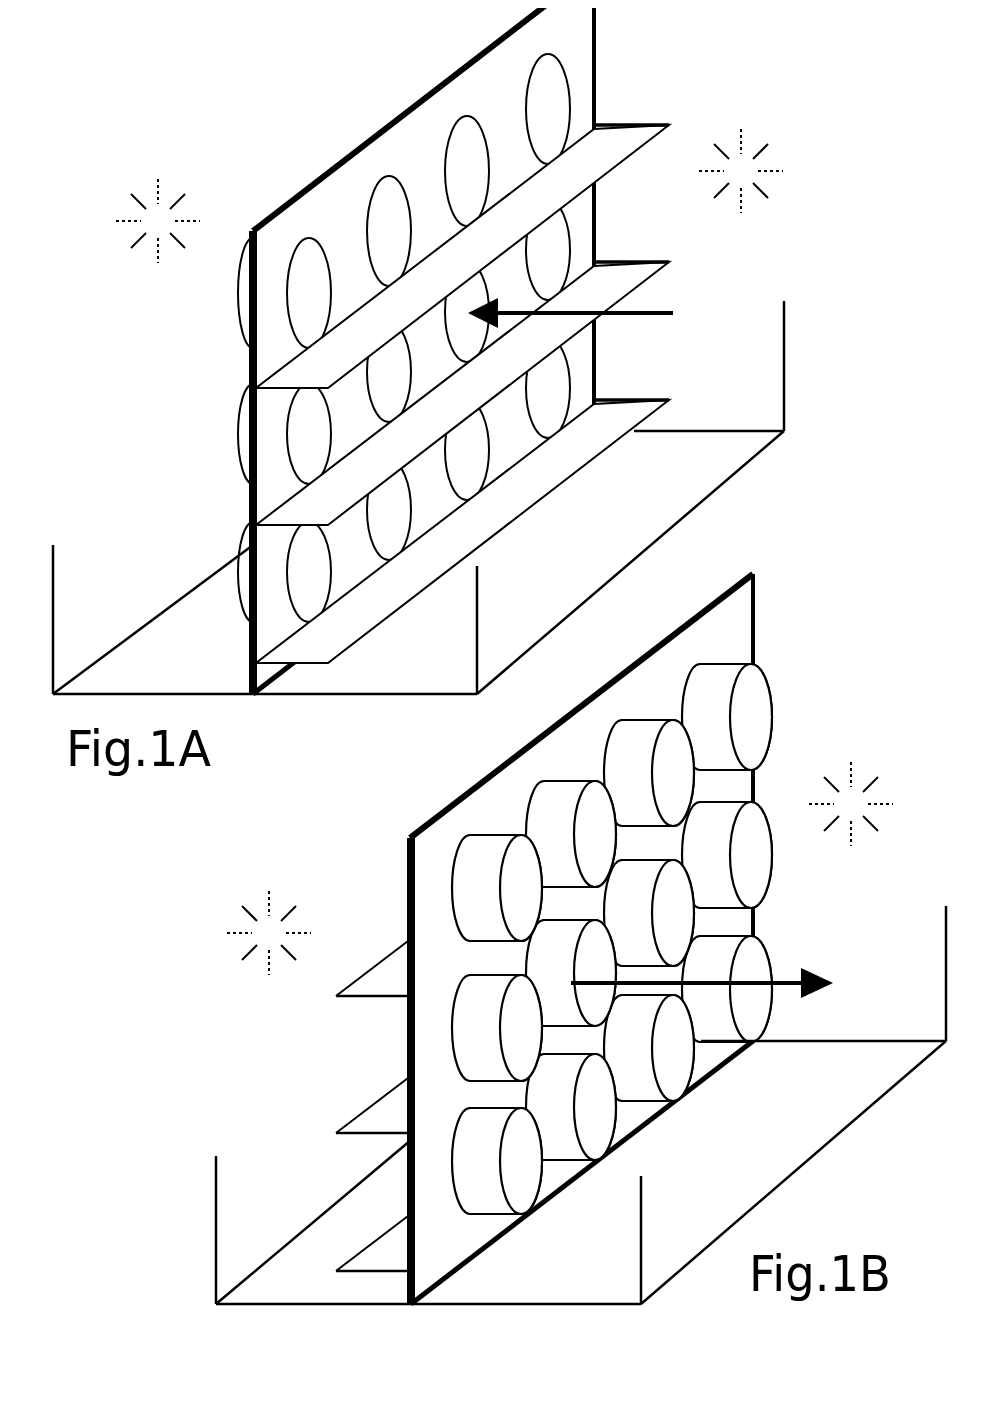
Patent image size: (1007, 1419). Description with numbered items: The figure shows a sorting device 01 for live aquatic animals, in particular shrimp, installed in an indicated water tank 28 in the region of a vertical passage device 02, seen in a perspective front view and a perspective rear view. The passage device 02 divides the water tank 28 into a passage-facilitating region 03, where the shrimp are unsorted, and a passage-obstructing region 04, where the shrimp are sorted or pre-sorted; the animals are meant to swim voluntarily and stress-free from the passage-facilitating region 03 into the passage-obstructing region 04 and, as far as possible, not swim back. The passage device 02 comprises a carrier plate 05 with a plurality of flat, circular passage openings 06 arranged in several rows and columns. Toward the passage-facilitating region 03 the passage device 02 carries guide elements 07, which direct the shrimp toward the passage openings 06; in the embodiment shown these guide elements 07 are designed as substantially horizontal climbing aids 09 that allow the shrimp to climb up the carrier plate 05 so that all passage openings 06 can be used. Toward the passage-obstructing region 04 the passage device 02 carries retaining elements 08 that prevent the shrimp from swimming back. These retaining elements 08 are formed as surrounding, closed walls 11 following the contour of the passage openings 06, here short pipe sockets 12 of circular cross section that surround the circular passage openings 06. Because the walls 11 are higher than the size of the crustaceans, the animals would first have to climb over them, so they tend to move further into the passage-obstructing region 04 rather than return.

In FIG. 1A, the sorting device 01 is at (178, 121).
In FIG. 1B, the sorting device 01 is at (166, 952).
In FIG. 1A, the passage device 02 is at (652, 78).
In FIG. 1B, the passage device 02 is at (779, 648).
In FIG. 1A, the passage-facilitating region 03 is at (741, 171).
In FIG. 1B, the passage-facilitating region 03 is at (269, 933).
In FIG. 1A, the passage-obstructing region 04 is at (158, 221).
In FIG. 1B, the passage-obstructing region 04 is at (851, 804).
In FIG. 1A, the carrier plate 05 is at (272, 345).
In FIG. 1B, the carrier plate 05 is at (427, 895).
In FIG. 1A, the passage openings 06 is at (460, 163).
In FIG. 1A, the guide elements 07 is at (632, 270).
In FIG. 1B, the guide elements 07 is at (387, 982).
In FIG. 1A, the retaining elements 08 is at (245, 430).
In FIG. 1B, the retaining elements 08 is at (750, 857).
In FIG. 1A, the climbing aids 09 is at (462, 394).
In FIG. 1B, the walls 11 is at (779, 707).
In FIG. 1B, the pipe sockets 12 is at (612, 939).
In FIG. 1A, the water tank 28 is at (784, 370).
In FIG. 1B, the water tank 28 is at (215, 1207).